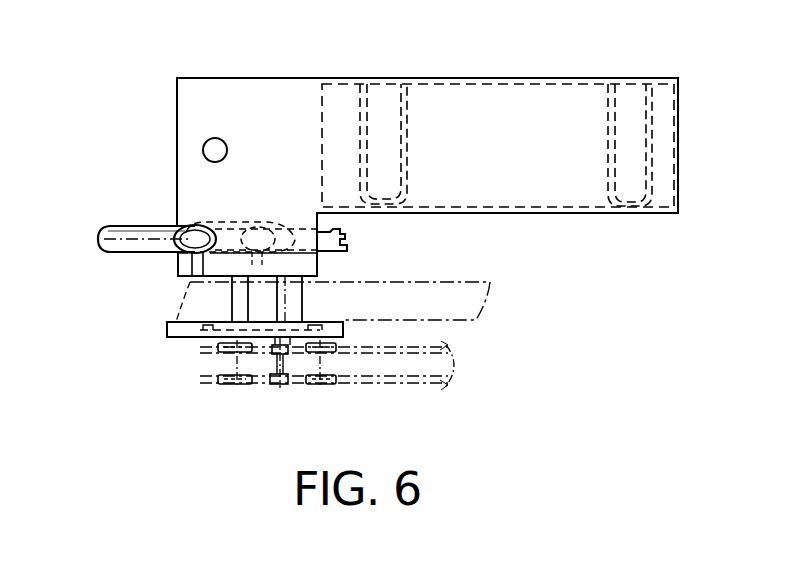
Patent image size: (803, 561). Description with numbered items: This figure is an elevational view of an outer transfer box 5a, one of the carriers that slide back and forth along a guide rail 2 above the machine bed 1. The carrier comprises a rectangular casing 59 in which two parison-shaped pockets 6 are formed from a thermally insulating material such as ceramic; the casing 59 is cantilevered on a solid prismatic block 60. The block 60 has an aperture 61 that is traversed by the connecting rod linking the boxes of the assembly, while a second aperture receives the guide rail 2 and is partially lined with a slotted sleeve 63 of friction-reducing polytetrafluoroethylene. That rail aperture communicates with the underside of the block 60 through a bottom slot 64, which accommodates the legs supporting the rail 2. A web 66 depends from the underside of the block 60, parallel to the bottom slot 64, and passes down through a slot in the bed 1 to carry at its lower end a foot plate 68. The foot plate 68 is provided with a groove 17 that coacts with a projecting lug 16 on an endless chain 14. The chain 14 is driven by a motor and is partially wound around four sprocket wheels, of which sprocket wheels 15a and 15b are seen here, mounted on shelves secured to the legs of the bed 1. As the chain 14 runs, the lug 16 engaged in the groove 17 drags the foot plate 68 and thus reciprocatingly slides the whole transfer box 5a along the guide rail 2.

The bed 1 is at (440, 297).
The guide rail 2 is at (112, 234).
The outer transfer box 5a is at (578, 218).
The parison-shaped pockets 6 is at (381, 100).
The endless chain 14 is at (344, 365).
The sprocket wheel 15a is at (335, 375).
The sprocket wheel 15b is at (238, 355).
The projecting lug 16 is at (283, 343).
The groove 17 is at (217, 335).
The rectangular casing 59 is at (511, 120).
The solid prismatic block 60 is at (198, 92).
The aperture 61 is at (212, 150).
The slotted sleeve 63 is at (232, 225).
The bottom slot 64 is at (193, 265).
The web 66 is at (288, 290).
The foot plate 68 is at (176, 325).